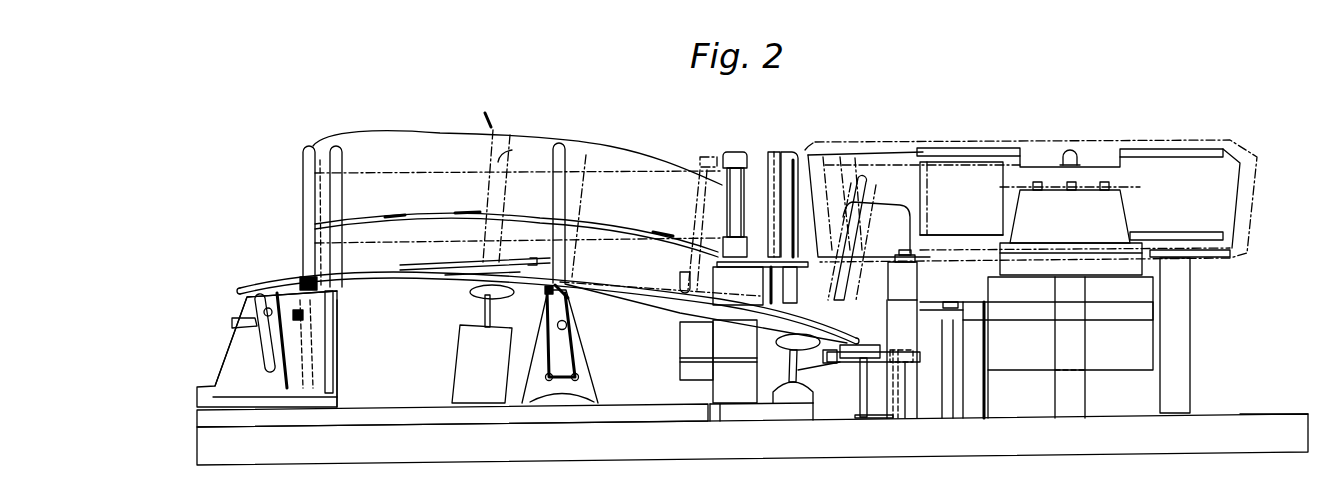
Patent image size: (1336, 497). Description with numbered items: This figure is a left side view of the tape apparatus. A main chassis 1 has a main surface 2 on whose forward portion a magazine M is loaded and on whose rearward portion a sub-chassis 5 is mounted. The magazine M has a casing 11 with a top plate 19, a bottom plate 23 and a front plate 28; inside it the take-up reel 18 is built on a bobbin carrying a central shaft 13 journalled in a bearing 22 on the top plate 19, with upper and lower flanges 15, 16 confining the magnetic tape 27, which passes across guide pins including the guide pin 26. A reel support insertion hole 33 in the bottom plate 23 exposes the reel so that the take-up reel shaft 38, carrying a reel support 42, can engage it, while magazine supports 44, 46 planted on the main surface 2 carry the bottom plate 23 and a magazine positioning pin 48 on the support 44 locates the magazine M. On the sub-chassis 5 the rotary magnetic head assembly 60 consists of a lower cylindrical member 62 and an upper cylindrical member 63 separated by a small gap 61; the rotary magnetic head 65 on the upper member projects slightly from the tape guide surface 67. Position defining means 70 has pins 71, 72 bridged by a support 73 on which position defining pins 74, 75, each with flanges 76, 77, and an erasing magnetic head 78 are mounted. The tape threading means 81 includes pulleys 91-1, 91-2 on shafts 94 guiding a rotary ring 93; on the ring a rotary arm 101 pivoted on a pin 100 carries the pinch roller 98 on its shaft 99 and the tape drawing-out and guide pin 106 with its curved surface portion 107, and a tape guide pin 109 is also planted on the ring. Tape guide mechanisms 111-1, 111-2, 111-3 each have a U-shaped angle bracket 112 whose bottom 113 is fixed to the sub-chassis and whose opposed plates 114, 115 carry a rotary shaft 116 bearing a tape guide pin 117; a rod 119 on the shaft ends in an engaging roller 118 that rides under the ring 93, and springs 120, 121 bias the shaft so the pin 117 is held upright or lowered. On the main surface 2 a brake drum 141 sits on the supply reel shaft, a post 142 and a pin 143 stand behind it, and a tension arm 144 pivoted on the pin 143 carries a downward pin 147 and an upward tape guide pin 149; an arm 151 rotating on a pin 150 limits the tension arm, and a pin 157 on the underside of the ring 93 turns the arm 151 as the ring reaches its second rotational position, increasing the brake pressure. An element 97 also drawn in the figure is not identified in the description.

The main chassis 1 is at (729, 449).
The main surface 2 is at (1236, 413).
The sub-chassis 5 is at (195, 418).
The casing 11 is at (1149, 142).
The central shaft 13 is at (1068, 152).
The flange 15 is at (938, 160).
The flange 16 is at (943, 235).
The take-up reel 18 is at (990, 200).
The top plate 19 is at (934, 146).
The bearing 22 is at (1081, 151).
The bottom plate 23 is at (1218, 258).
The guide pin 26 is at (849, 153).
The magnetic tape 27 is at (885, 167).
The front plate 28 is at (811, 151).
The reel support insertion hole 33 is at (1000, 256).
The take-up reel shaft 38 is at (1085, 402).
The reel support 42 is at (1128, 219).
The magazine support 44 is at (917, 284).
The magazine support 46 is at (1187, 330).
The magazine positioning pin 48 is at (903, 250).
The rotary magnetic head assembly 60 is at (517, 144).
The small gap 61 is at (405, 210).
The lower cylindrical member 62 is at (651, 316).
The upper cylindrical member 63 is at (615, 141).
The rotary magnetic head 65 is at (467, 209).
The tape guide surface 67 is at (318, 220).
The position defining means 70 is at (743, 200).
The pin 71 is at (792, 294).
The pin 72 is at (765, 294).
The support 73 is at (734, 274).
The position defining pin 74 is at (728, 150).
The position defining pin 75 is at (782, 152).
The flange 76 is at (688, 235).
The flange 77 is at (702, 156).
The erasing magnetic head 78 is at (757, 152).
The tape threading means 81 is at (366, 321).
The pulley 91-1 is at (777, 343).
The pulley 91-2 is at (480, 310).
The rotary ring 93 is at (250, 284).
The shaft 94 is at (487, 310).
The lever 97 is at (827, 381).
The pinch roller 98 is at (582, 152).
The shaft 99 is at (553, 263).
The pin 100 is at (426, 265).
The rotary arm 101 is at (461, 269).
The tape drawing-out and guide pin 106 is at (491, 114).
The curved surface portion 107 is at (512, 150).
The tape guide pin 109 is at (701, 190).
The tape guide mechanism 111-1 is at (632, 364).
The tape guide mechanism 111-2 is at (387, 362).
The tape guide mechanism 111-3 is at (210, 344).
The U-shaped angle bracket 112 is at (364, 342).
The bottom 113 is at (287, 388).
The opposed plate 114 is at (250, 378).
The opposed plate 115 is at (337, 375).
The rotary shaft 116 is at (231, 319).
The tape guide pin 117 is at (303, 160).
The engaging roller 118 is at (550, 297).
The rod 119 is at (565, 282).
The spring 120 is at (548, 318).
The spring 121 is at (602, 282).
The brake drum 141 is at (1117, 364).
The post 142 is at (985, 402).
The pin 143 is at (1036, 347).
The tension arm 144 is at (923, 352).
The downward pin 147 is at (910, 362).
The tape guide pin 149 is at (806, 140).
The pin 150 is at (878, 390).
The arm 151 is at (868, 362).
The pin 157 is at (838, 362).
The magazine M is at (1036, 199).